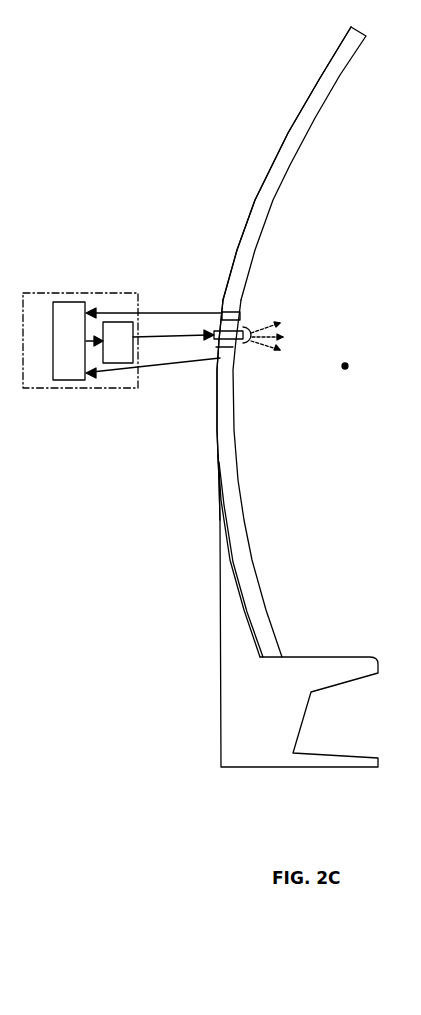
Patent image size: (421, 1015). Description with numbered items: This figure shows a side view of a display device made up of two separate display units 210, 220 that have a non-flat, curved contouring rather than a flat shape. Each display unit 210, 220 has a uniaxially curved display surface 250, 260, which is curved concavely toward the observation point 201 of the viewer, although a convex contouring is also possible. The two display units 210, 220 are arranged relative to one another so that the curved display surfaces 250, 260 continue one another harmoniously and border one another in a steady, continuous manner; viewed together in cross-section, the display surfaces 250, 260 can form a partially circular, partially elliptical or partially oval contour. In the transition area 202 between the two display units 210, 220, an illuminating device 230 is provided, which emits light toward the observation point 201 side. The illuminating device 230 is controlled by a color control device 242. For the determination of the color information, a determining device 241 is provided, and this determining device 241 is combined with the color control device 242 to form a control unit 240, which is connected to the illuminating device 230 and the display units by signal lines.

The observation point 201 is at (345, 363).
The transition area 202 is at (252, 312).
The display unit 210 is at (288, 133).
The display unit 220 is at (233, 393).
The illuminating device 230 is at (250, 332).
The control unit 240 is at (122, 338).
The determining device 241 is at (72, 341).
The color control device 242 is at (121, 342).
The curved display surface 250 is at (315, 118).
The curved display surface 260 is at (255, 570).